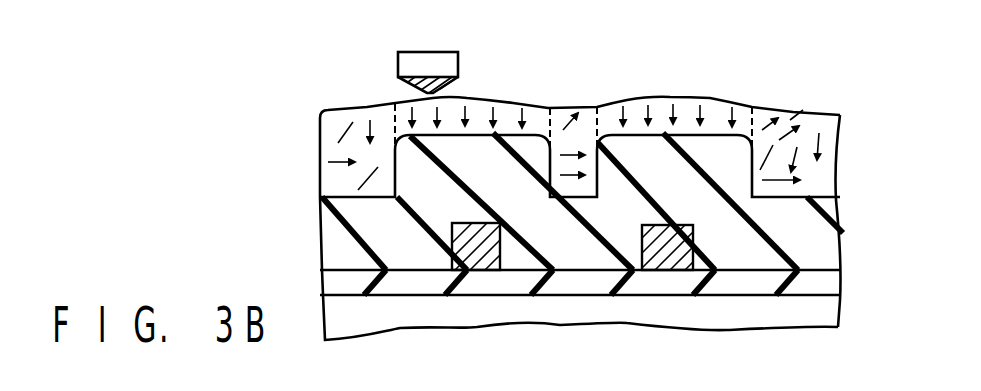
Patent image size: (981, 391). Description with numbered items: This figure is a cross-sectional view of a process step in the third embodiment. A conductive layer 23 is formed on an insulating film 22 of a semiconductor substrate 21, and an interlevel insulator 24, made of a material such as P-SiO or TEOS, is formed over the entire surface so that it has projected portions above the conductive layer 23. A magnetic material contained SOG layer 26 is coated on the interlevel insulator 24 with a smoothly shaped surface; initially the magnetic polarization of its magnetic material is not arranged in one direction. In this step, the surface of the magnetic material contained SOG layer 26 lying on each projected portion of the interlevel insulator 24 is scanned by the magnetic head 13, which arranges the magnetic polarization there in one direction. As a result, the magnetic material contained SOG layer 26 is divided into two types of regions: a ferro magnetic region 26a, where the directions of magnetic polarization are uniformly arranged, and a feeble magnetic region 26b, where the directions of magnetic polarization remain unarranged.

The magnetic head 13 is at (428, 53).
The semiconductor substrate 21 is at (815, 318).
The insulating film 22 is at (814, 283).
The conductive layer 23 is at (478, 258).
The interlevel insulator 24 is at (812, 243).
The magnetic material contained SOG layer 26 is at (834, 62).
The ferro magnetic region 26a is at (478, 115).
The feeble magnetic region 26b is at (338, 127).